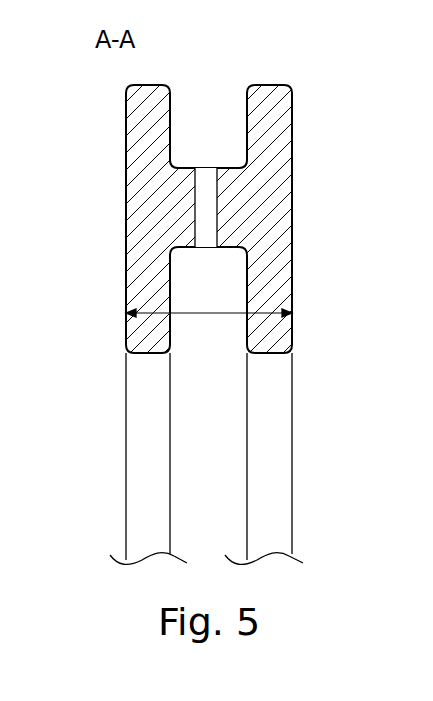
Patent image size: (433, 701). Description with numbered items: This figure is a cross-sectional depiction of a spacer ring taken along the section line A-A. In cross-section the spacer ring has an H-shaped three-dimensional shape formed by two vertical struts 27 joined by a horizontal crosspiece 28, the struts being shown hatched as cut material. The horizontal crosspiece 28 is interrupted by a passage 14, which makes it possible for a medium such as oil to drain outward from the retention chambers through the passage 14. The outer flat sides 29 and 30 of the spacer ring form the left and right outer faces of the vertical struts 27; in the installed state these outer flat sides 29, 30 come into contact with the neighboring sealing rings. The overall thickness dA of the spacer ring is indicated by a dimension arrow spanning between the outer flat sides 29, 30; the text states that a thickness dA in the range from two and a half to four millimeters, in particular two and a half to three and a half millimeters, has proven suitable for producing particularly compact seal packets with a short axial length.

The vertical struts 27 is at (126, 96).
The horizontal crosspiece 28 is at (182, 163).
The outer flat side 29 is at (292, 221).
The outer flat side 30 is at (126, 222).
The passage 14 is at (207, 213).
The thickness of the spacer ring dA is at (202, 314).